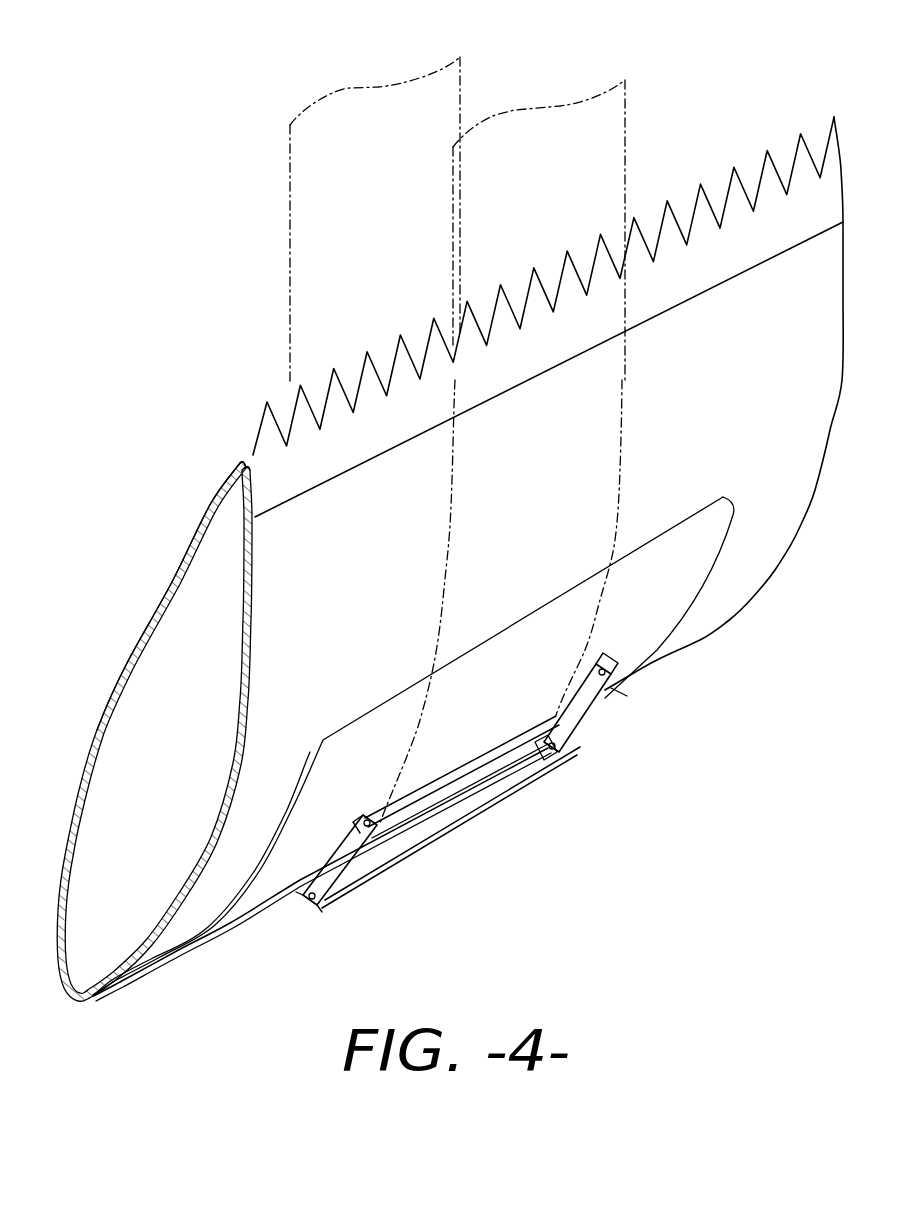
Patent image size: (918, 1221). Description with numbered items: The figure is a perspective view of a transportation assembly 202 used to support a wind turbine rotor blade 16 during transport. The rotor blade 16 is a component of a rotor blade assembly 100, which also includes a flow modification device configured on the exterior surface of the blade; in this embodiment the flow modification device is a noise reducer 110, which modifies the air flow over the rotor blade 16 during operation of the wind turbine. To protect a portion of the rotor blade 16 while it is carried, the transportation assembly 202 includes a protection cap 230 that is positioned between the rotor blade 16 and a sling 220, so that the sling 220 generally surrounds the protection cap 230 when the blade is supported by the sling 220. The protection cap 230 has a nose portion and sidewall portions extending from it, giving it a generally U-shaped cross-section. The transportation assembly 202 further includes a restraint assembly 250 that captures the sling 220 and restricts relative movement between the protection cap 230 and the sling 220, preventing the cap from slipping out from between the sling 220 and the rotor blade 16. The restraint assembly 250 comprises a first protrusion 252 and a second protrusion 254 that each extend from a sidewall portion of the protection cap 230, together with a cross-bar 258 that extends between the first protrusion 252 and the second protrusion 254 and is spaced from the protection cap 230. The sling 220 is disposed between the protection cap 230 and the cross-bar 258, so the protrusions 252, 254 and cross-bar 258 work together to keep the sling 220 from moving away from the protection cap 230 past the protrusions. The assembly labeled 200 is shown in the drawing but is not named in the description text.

The vortex generator assembly / serrated panel 200 is at (130, 97).
The sling 220 is at (268, 252).
The rotor blade assembly 100 is at (133, 636).
The rotor blade 16 is at (175, 577).
The noise reducer 110 is at (280, 484).
The protection cap 230 is at (745, 506).
The transportation assembly 202 is at (527, 810).
The restraint assembly 250 is at (462, 843).
The cross-bar 258 is at (430, 861).
The first protrusion 252 is at (368, 886).
The second protrusion 254 is at (611, 723).